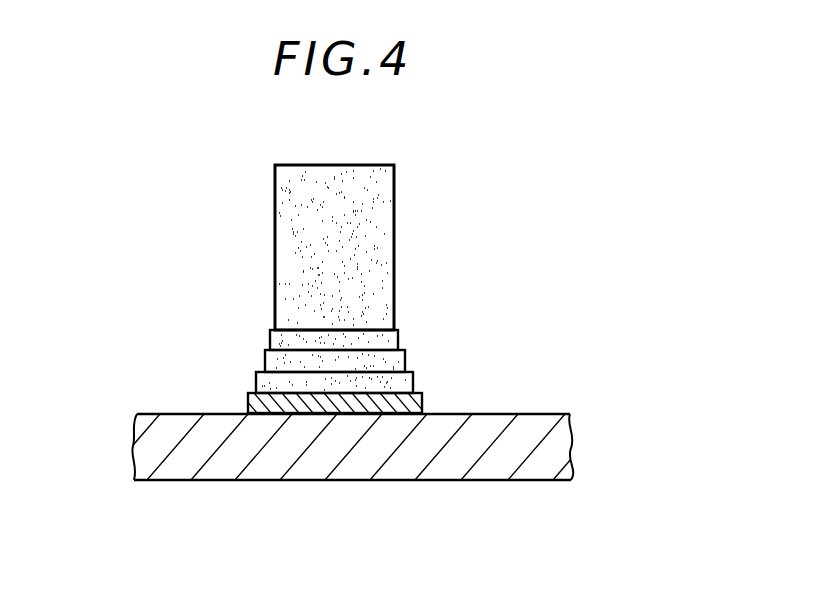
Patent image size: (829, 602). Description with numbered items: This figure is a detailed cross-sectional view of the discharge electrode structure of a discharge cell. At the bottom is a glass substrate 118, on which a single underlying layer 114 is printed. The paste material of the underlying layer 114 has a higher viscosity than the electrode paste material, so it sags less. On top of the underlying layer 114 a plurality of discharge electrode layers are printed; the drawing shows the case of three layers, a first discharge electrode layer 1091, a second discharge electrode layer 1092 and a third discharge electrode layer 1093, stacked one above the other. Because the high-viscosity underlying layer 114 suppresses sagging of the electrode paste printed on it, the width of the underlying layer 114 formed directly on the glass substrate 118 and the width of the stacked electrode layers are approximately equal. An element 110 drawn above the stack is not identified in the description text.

The upper electrode / bump 110 is at (383, 219).
The third discharge electrode layer 1093 is at (396, 336).
The second discharge electrode layer 1092 is at (404, 356).
The first discharge electrode layer 1091 is at (410, 380).
The underlying layer 114 is at (419, 401).
The glass substrate 118 is at (420, 453).